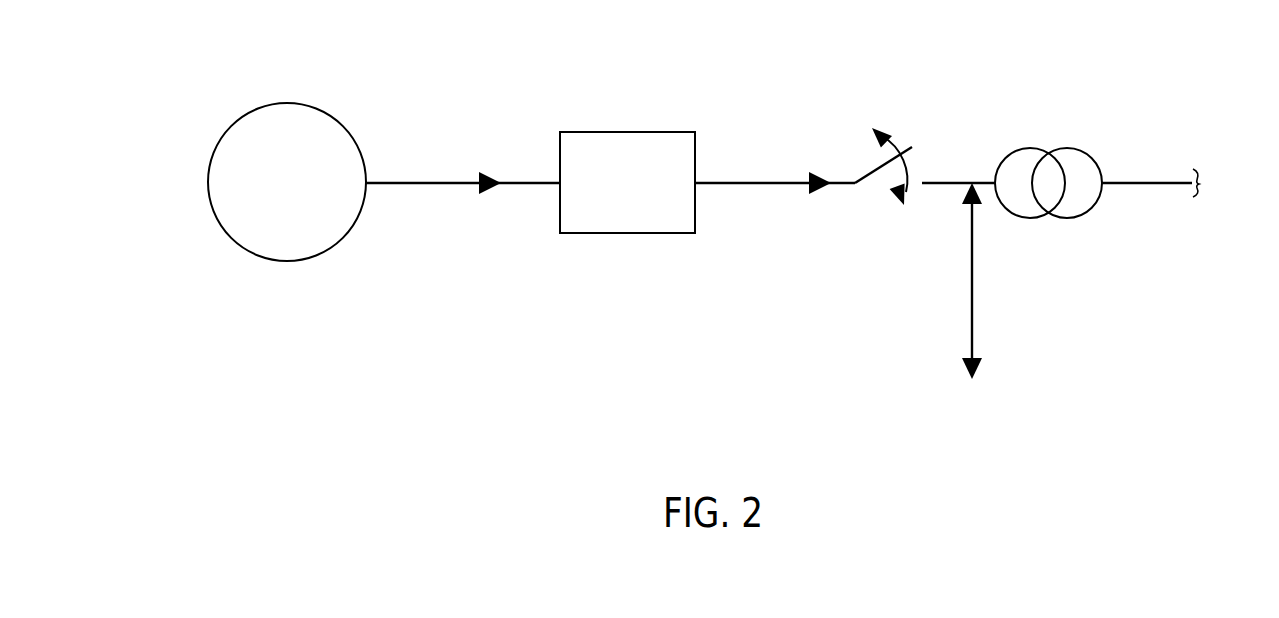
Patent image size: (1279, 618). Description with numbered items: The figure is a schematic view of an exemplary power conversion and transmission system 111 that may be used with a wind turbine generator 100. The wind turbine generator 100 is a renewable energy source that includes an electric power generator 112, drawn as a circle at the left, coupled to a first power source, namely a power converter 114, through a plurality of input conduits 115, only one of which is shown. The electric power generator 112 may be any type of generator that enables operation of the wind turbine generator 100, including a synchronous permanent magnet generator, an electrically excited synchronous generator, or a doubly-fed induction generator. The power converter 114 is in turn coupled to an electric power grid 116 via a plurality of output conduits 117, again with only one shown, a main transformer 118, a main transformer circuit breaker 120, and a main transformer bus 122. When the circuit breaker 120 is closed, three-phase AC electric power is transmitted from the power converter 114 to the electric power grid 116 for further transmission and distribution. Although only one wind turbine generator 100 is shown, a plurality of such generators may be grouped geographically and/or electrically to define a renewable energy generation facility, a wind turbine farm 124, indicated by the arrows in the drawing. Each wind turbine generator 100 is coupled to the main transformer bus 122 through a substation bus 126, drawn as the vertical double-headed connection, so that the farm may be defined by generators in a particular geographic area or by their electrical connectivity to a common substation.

The wind turbine generator 100 is at (213, 84).
The power conversion and transmission system 111 is at (733, 52).
The electric power generator 112 is at (327, 130).
The power converter 114 is at (618, 131).
The input conduits 115 is at (428, 178).
The electric power grid 116 is at (1238, 234).
The output conduits 117 is at (753, 180).
The main transformer 118 is at (1067, 147).
The main transformer circuit breaker 120 is at (905, 133).
The main transformer bus 122 is at (948, 180).
The wind turbine farm 124 is at (922, 377).
The substation bus 126 is at (972, 281).